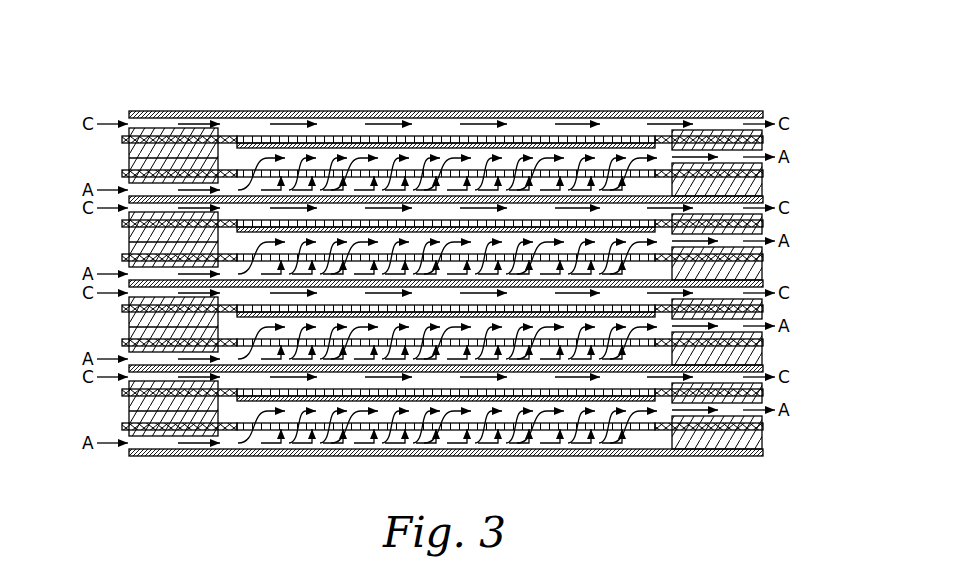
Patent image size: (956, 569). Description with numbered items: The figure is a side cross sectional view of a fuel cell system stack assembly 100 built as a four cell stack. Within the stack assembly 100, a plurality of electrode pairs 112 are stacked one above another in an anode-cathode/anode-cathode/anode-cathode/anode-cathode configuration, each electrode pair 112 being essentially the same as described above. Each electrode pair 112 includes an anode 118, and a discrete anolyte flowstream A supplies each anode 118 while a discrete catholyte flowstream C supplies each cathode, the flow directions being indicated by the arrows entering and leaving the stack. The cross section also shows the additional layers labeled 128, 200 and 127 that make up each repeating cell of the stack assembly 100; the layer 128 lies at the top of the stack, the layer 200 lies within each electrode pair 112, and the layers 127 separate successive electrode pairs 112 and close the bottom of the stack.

The fuel cell system stack assembly 100 is at (340, 66).
The electrode pair 112 is at (393, 288).
The anode 118 is at (765, 173).
The separator plate 127 is at (765, 190).
The end plate 128 is at (633, 111).
The cathode flow field / porous layer 200 is at (765, 141).